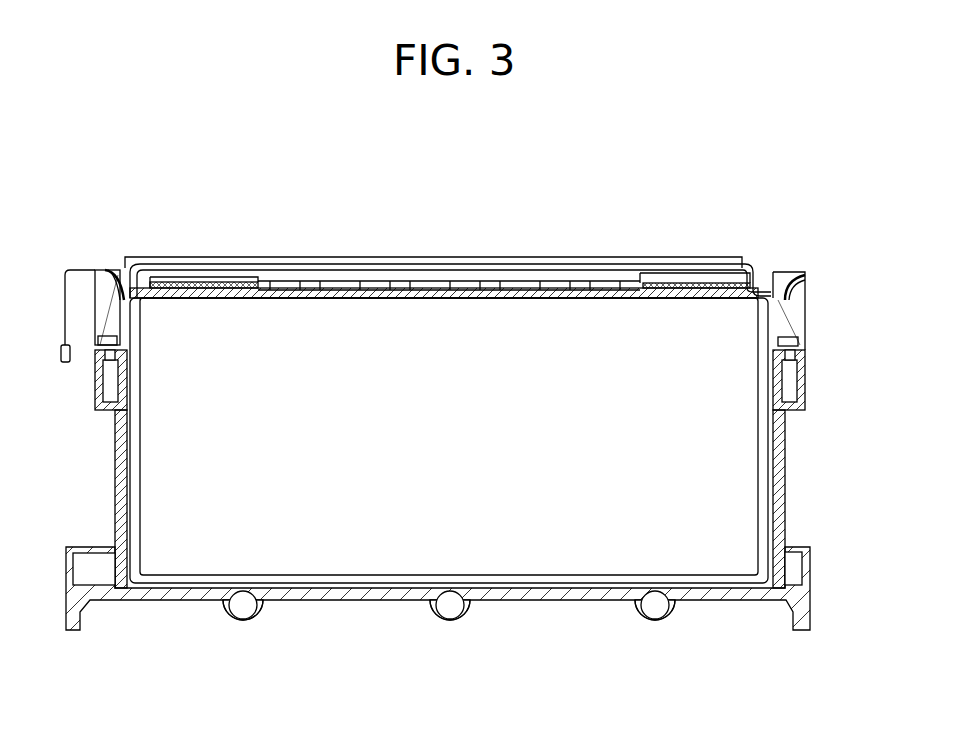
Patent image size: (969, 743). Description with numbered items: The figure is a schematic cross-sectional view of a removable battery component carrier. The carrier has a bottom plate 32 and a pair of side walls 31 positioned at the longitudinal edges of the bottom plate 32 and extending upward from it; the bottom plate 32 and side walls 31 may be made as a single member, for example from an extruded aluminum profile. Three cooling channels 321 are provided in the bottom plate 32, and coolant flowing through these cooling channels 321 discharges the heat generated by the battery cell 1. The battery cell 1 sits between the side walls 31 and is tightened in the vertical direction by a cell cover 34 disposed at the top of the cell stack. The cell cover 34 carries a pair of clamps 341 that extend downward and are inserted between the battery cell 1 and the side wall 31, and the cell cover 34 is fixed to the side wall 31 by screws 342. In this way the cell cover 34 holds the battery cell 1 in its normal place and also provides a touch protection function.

The battery cell 1 is at (653, 343).
The side wall 31 is at (107, 478).
The bottom plate 32 is at (545, 608).
The cooling channel 321 is at (256, 633).
The cell cover 34 is at (550, 258).
The clamp 341 is at (138, 370).
The screw 342 is at (112, 340).